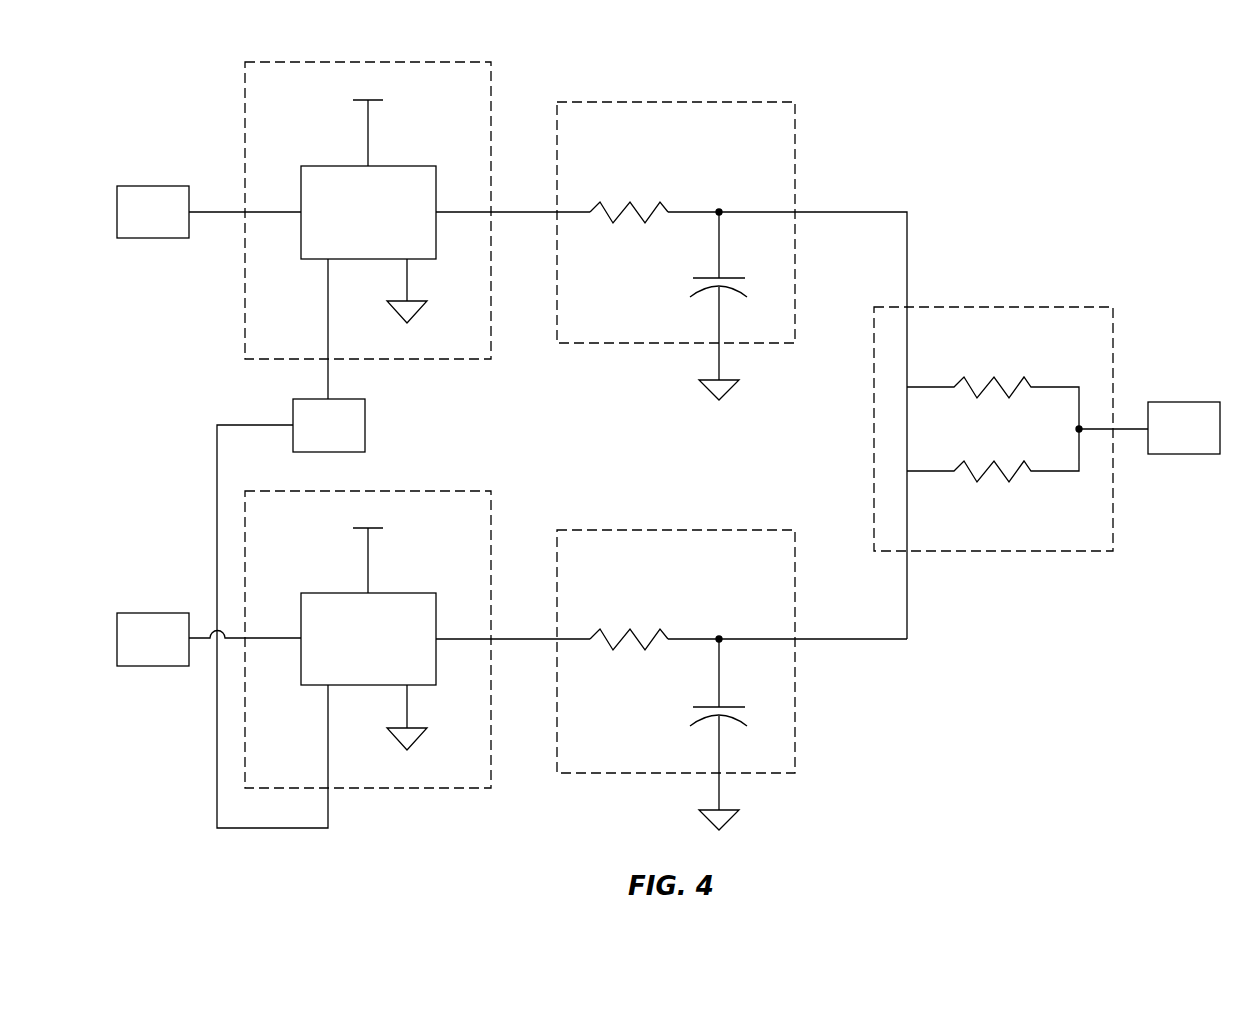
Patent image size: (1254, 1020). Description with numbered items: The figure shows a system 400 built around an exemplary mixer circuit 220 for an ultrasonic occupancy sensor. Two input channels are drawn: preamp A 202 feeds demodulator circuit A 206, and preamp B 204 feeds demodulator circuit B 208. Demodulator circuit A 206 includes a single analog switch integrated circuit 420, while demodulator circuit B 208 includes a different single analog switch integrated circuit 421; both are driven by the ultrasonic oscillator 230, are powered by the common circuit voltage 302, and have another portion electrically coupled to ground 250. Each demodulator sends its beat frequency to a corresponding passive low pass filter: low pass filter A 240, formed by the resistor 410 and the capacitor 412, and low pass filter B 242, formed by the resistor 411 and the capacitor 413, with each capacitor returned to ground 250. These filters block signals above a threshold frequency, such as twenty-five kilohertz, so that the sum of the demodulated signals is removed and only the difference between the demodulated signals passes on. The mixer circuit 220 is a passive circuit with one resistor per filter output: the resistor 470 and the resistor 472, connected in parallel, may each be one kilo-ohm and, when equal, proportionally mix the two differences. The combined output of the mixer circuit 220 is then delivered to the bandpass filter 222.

The system 400 is at (1133, 74).
The preamp A 202 is at (153, 212).
The preamp B 204 is at (153, 639).
The demodulator circuit A 206 is at (478, 62).
The demodulator circuit B 208 is at (478, 491).
The mixer circuit 220 is at (1097, 307).
The bandpass filter 222 is at (1149, 428).
The ultrasonic oscillator 230 is at (329, 425).
The low pass filter A 240 is at (778, 102).
The low pass filter B 242 is at (778, 530).
The ground 250 is at (417, 313).
The common circuit voltage 302 is at (378, 101).
The resistor 410 is at (640, 206).
The resistor 411 is at (640, 633).
The capacitor 412 is at (695, 287).
The capacitor 413 is at (695, 716).
The single analog switch integrated circuit 420 is at (368, 212).
The single analog switch integrated circuit 421 is at (368, 639).
The resistor 470 is at (1003, 385).
The resistor 472 is at (1003, 473).